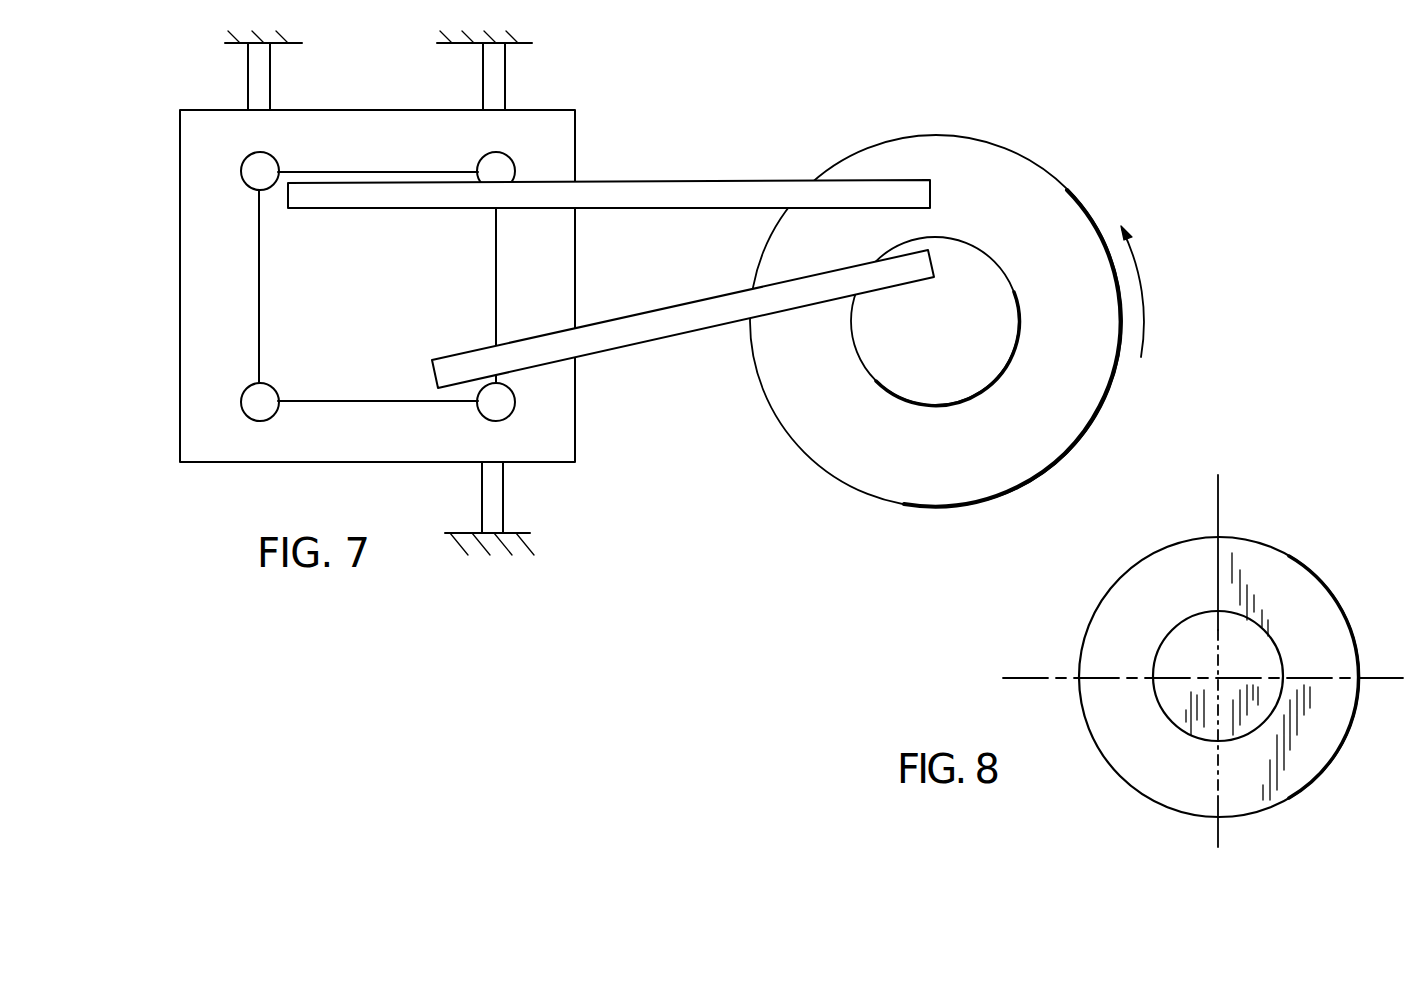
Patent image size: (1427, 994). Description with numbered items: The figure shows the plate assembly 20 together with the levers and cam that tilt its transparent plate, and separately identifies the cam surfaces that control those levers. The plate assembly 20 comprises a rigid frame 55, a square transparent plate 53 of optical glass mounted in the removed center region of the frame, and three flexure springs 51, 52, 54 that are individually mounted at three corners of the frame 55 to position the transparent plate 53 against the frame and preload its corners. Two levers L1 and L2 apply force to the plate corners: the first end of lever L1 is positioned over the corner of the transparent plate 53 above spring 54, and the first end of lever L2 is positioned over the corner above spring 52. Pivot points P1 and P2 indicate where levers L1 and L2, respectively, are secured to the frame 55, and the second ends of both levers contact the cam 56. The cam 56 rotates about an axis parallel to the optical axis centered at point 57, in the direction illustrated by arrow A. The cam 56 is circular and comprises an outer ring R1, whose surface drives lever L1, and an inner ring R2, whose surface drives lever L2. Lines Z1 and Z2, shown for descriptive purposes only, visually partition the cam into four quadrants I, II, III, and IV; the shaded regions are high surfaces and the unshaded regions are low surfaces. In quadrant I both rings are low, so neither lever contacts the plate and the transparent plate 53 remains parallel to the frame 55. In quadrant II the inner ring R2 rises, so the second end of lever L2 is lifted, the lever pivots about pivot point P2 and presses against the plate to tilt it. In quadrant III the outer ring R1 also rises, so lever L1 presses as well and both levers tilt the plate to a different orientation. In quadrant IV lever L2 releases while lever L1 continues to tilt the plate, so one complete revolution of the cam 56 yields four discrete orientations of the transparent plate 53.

In FIG. 7, the plate assembly 20 is at (158, 282).
In FIG. 7, the spring 51 is at (485, 69).
In FIG. 7, the spring 52 is at (492, 482).
In FIG. 7, the transparent plate 53 is at (272, 325).
In FIG. 7, the spring 54 is at (250, 70).
In FIG. 7, the frame 55 is at (188, 157).
In FIG. 7, the cam 56 is at (936, 321).
In FIG. 8, the cam 56 is at (1343, 603).
In FIG. 7, the point 57 is at (933, 320).
In FIG. 7, the pivot point P1 is at (670, 193).
In FIG. 7, the lever L1 is at (753, 190).
In FIG. 7, the pivot point P2 is at (668, 322).
In FIG. 7, the lever L2 is at (723, 317).
In FIG. 7, the arrow A is at (1133, 275).
In FIG. 8, the line Z1 is at (1220, 505).
In FIG. 8, the line Z2 is at (1385, 677).
In FIG. 8, the outer ring R1 is at (1097, 647).
In FIG. 8, the inner ring R2 is at (1190, 635).
In FIG. 8, the quadrant I is at (1056, 545).
In FIG. 8, the quadrant II is at (1061, 797).
In FIG. 8, the quadrant III is at (1359, 792).
In FIG. 8, the quadrant IV is at (1350, 543).